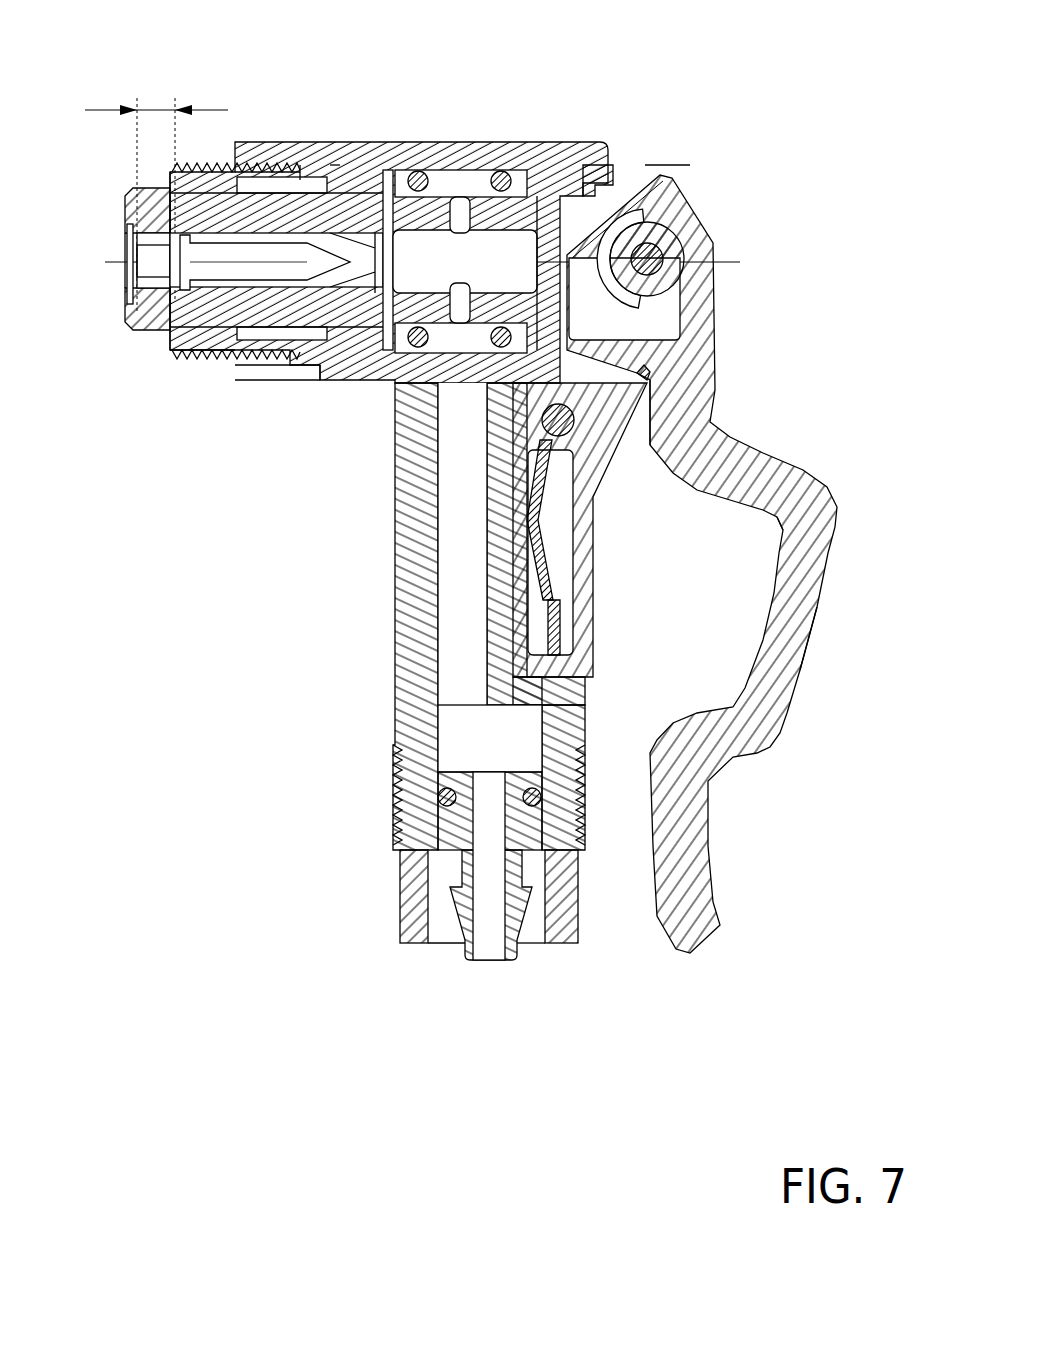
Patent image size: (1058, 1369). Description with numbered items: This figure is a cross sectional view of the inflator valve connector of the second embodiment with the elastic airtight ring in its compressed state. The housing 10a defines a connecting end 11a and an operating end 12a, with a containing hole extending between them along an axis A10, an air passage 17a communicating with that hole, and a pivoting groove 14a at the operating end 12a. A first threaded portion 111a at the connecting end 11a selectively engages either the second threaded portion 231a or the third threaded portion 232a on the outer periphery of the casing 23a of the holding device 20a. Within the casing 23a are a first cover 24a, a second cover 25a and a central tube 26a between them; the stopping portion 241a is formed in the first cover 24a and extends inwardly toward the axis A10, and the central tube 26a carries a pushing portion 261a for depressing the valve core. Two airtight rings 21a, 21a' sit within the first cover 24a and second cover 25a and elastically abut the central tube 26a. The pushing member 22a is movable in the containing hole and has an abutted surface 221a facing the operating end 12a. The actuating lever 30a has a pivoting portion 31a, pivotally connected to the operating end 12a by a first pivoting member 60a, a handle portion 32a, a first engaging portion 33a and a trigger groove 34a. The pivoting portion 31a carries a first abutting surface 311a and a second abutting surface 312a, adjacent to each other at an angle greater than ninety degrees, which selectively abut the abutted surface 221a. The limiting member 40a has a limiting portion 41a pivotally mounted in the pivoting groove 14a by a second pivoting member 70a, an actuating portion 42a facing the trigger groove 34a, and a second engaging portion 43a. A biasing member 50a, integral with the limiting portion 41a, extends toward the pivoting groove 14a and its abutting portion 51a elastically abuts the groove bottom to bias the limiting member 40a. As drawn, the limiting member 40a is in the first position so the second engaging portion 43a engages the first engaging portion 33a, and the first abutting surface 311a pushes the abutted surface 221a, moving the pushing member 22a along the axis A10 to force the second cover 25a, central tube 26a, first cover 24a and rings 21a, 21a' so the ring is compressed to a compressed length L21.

The compressed length L21 is at (152, 103).
The housing 10a is at (426, 136).
The connecting end 11a is at (320, 136).
The first threaded portion 111a is at (387, 165).
The operating end 12a is at (701, 162).
The pivoting groove 14a is at (587, 660).
The air passage 17a is at (450, 720).
The holding device 20a is at (238, 136).
The elastic airtight ring 21a is at (250, 316).
The elastic airtight ring 21a' is at (342, 342).
The pushing member 22a is at (485, 170).
The abutted surface 221a is at (555, 192).
The casing 23a is at (248, 386).
The second threaded portion 231a is at (355, 378).
The third threaded portion 232a is at (187, 372).
The first cover 24a is at (125, 208).
The stopping portion 241a is at (125, 313).
The second cover 25a is at (336, 160).
The central tube 26a is at (280, 366).
The pushing portion 261a is at (452, 196).
The actuating lever 30a is at (728, 352).
The pivoting portion 31a is at (692, 256).
The first abutting surface 311a is at (683, 322).
The second abutting surface 312a is at (640, 170).
The handle portion 32a is at (812, 640).
The first engaging portion 33a is at (650, 375).
The trigger groove 34a is at (762, 584).
The limiting member 40a is at (600, 548).
The limiting portion 41a is at (628, 425).
The actuating portion 42a is at (592, 600).
The second engaging portion 43a is at (702, 402).
The biasing member 50a is at (518, 600).
The abutting portion 51a is at (520, 548).
The first pivoting member 60a is at (658, 250).
The second pivoting member 70a is at (525, 432).
The axis A10 is at (742, 262).